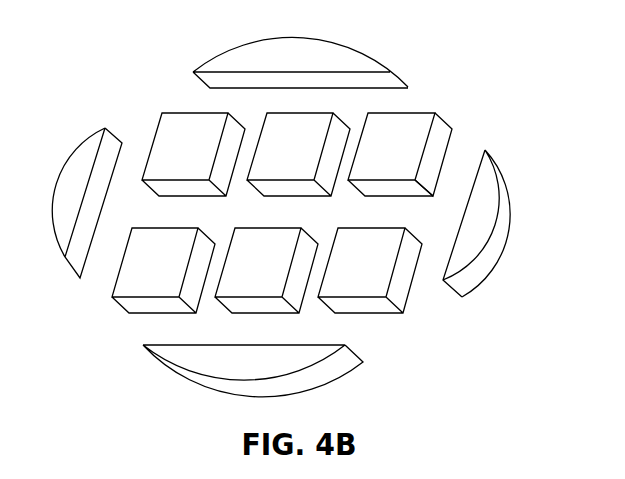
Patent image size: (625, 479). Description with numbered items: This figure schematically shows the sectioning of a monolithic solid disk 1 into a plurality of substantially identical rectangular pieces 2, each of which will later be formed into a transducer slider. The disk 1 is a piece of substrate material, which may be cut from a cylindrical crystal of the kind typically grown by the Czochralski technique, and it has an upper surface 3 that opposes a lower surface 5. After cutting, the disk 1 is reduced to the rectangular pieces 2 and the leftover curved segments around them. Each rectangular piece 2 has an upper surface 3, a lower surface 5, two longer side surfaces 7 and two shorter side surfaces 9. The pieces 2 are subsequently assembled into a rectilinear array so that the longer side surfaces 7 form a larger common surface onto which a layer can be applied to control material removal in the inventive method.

The monolithic solid disk 1 is at (312, 215).
The rectangular piece 2 is at (291, 199).
The upper surface 3 is at (409, 154).
The lower surface 5 is at (397, 197).
The longer side surface 7 is at (443, 122).
The shorter side surface 9 is at (422, 184).